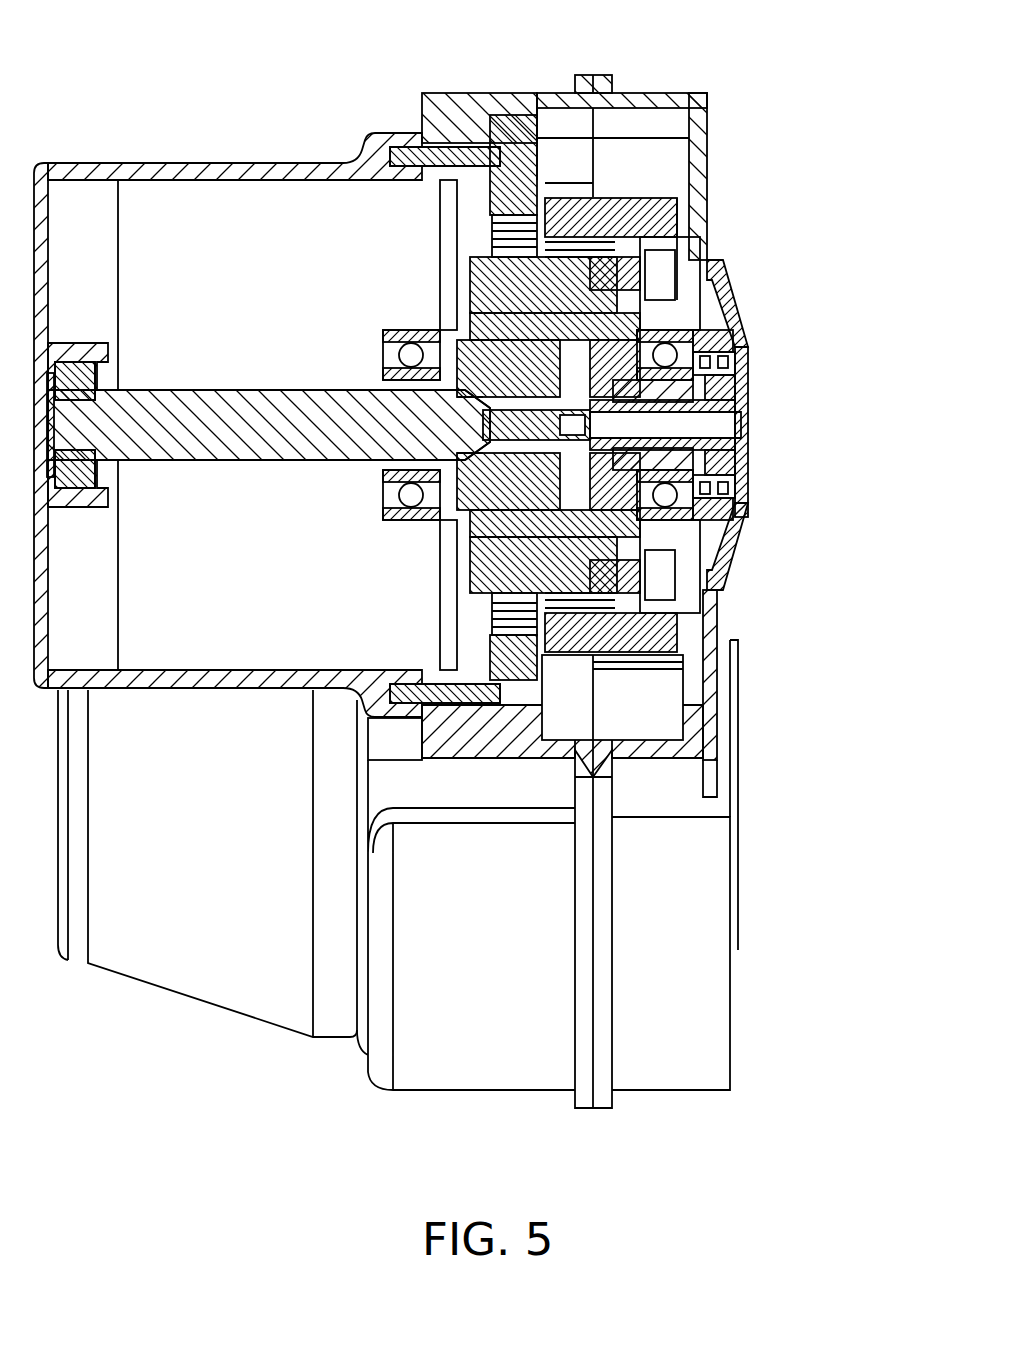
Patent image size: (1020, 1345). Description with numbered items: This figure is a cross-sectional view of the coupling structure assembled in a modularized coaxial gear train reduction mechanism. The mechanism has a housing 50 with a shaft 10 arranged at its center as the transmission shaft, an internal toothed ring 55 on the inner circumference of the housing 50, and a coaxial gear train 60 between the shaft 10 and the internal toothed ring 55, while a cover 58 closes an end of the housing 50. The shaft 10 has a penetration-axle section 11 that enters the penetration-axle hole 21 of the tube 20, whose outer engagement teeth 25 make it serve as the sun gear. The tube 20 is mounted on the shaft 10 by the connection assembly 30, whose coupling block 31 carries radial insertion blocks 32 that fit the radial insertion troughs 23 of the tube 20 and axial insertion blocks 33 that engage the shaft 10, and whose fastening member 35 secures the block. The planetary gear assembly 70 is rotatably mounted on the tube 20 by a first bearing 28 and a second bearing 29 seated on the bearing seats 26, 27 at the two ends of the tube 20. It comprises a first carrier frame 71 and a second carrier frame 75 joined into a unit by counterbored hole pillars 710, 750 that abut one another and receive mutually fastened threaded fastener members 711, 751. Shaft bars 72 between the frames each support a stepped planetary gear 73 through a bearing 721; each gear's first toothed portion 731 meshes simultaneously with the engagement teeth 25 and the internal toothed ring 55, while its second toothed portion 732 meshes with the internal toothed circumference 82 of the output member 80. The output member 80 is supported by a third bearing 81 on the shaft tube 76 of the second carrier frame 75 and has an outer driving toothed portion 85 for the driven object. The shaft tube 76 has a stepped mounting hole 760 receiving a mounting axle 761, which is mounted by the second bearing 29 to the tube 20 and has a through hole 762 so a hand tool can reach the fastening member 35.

The shaft 10 is at (205, 393).
The penetration-axle section 11 is at (475, 368).
The tube 20 is at (665, 422).
The penetration-axle hole 21 is at (700, 360).
The radial insertion troughs 23 is at (693, 337).
The radial insertion blocks 32 is at (742, 287).
The engagement teeth 25 is at (500, 340).
The bearing seat 26 is at (470, 438).
The bearing seat 27 is at (692, 512).
The first bearing 28 is at (400, 520).
The second bearing 29 is at (737, 366).
The connection assembly 30 is at (437, 428).
The coupling block 31 is at (465, 560).
The axial insertion blocks 33 is at (453, 360).
The fastening member 35 is at (395, 390).
The housing 50 is at (609, 150).
The internal toothed ring 55 is at (480, 630).
The cover 58 is at (702, 137).
The coaxial gear train 60 is at (453, 257).
The planetary gear assembly 70 is at (444, 345).
The first carrier frame 71 is at (430, 542).
The shaft bars 72 is at (470, 580).
The stepped planetary gears 73 is at (490, 612).
The second carrier frame 75 is at (712, 565).
The shaft tube 76 is at (690, 490).
The output member 80 is at (610, 198).
The third bearing 81 is at (668, 352).
The internal toothed circumference 82 is at (600, 212).
The driving toothed portion 85 is at (670, 183).
The counterbored hole pillars 710 is at (517, 262).
The threaded fastener members 711 is at (490, 290).
The bearing 721 is at (650, 622).
The first toothed portion 731 is at (684, 699).
The second toothed portion 732 is at (650, 680).
The counterbored hole pillars 750 is at (558, 293).
The threaded fastener members 751 is at (515, 262).
The stepped mounting hole 760 is at (749, 425).
The mounting axle 761 is at (715, 400).
The through hole 762 is at (717, 430).